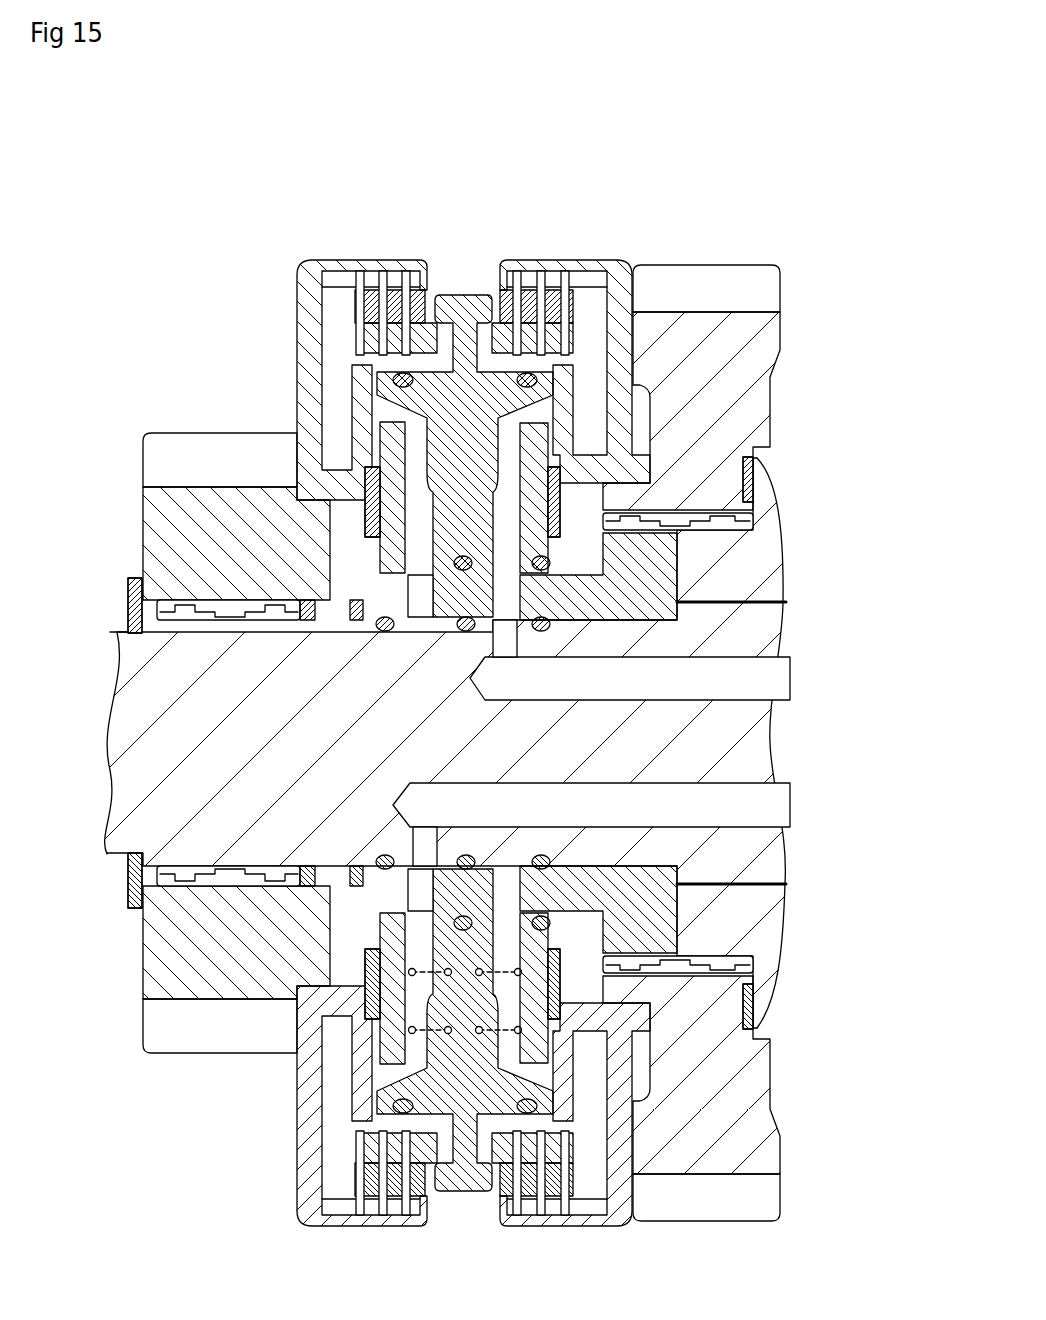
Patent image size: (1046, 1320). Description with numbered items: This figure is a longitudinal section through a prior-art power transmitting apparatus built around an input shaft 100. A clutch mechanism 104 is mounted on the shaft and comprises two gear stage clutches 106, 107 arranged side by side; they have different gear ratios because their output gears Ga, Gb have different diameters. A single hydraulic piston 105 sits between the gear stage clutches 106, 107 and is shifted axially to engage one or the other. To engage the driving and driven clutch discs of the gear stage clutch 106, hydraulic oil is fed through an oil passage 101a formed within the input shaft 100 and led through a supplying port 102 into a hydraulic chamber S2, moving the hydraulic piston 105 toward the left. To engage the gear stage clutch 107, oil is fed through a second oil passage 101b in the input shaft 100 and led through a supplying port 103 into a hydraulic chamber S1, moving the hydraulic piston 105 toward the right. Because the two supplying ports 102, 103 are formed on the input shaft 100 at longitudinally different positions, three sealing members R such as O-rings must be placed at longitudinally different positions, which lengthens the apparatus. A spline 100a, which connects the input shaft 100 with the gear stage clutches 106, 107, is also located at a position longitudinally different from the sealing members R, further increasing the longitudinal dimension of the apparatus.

The input shaft 100 is at (140, 670).
The spline 100a is at (720, 604).
The oil passage 101a is at (752, 700).
The oil passage 101b is at (752, 828).
The supplying port 102 is at (509, 633).
The supplying port 103 is at (424, 852).
The clutch mechanism 104 is at (473, 689).
The hydraulic piston 105 is at (463, 303).
The gear stage clutch 106 is at (397, 262).
The gear stage clutch 107 is at (532, 708).
The output gear Ga is at (768, 338).
The output gear Gb is at (162, 517).
The sealing member R is at (384, 632).
The hydraulic chamber S1 is at (358, 406).
The hydraulic chamber S2 is at (557, 410).